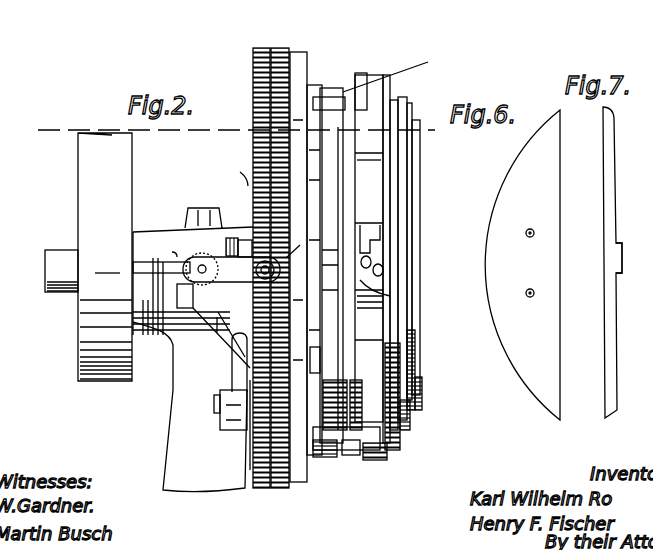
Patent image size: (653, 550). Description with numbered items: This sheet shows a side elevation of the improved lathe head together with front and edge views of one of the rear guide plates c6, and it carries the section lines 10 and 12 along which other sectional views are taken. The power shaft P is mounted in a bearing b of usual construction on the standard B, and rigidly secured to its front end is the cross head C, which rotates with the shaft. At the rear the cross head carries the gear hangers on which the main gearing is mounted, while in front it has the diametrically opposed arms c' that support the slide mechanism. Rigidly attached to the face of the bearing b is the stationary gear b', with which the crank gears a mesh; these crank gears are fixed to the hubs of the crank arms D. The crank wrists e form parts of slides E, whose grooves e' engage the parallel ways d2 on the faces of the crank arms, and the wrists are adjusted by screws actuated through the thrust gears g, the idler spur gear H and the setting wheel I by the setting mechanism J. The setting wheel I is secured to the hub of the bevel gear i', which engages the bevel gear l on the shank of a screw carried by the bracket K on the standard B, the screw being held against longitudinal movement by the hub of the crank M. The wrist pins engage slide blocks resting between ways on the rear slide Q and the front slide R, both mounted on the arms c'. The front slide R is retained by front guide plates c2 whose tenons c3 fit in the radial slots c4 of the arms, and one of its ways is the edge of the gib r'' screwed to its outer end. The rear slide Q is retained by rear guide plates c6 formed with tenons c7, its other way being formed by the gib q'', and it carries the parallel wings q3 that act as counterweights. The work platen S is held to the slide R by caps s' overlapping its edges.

In FIG. 2, the section line 12 is at (58, 135).
In FIG. 2, the power shaft P is at (86, 257).
In FIG. 2, the bearing b is at (193, 271).
In FIG. 2, the bevel gear l is at (173, 247).
In FIG. 2, the standard B is at (191, 407).
In FIG. 2, the spur gear H is at (246, 343).
In FIG. 2, the bracket K is at (240, 322).
In FIG. 2, the setting mechanism J is at (202, 257).
In FIG. 2, the bevel gear i' is at (225, 246).
In FIG. 2, the crank M is at (231, 269).
In FIG. 2, the thrust gear g is at (258, 500).
In FIG. 2, the crank gear a is at (279, 46).
In FIG. 2, the setting wheel I is at (237, 175).
In FIG. 2, the cross head C is at (299, 267).
In FIG. 2, the stationary gear b' is at (301, 231).
In FIG. 2, the crank arm D is at (316, 76).
In FIG. 2, the groove e' is at (332, 245).
In FIG. 2, the crank wrist e is at (344, 462).
In FIG. 2, the slide E is at (351, 80).
In FIG. 2, the rear slide Q is at (355, 248).
In FIG. 2, the rear guide plate c6 is at (345, 340).
In FIG. 6, the rear guide plate c6 is at (522, 265).
In FIG. 7, the rear guide plate c6 is at (620, 262).
In FIG. 2, the arm c' is at (370, 239).
In FIG. 2, the tenon c3 is at (383, 247).
In FIG. 2, the radial slot c4 is at (391, 263).
In FIG. 2, the tenon c7 is at (390, 296).
In FIG. 7, the tenon c7 is at (627, 258).
In FIG. 2, the front guide plate c2 is at (400, 214).
In FIG. 2, the wing q3 is at (322, 353).
In FIG. 2, the front slide R is at (372, 390).
In FIG. 2, the work platen S is at (418, 193).
In FIG. 2, the cap s' is at (422, 244).
In FIG. 2, the parallel way d2 is at (408, 452).
In FIG. 2, the gib q'' is at (383, 51).
In FIG. 2, the gib r'' is at (357, 493).
In FIG. 2, the section line 10 is at (365, 34).